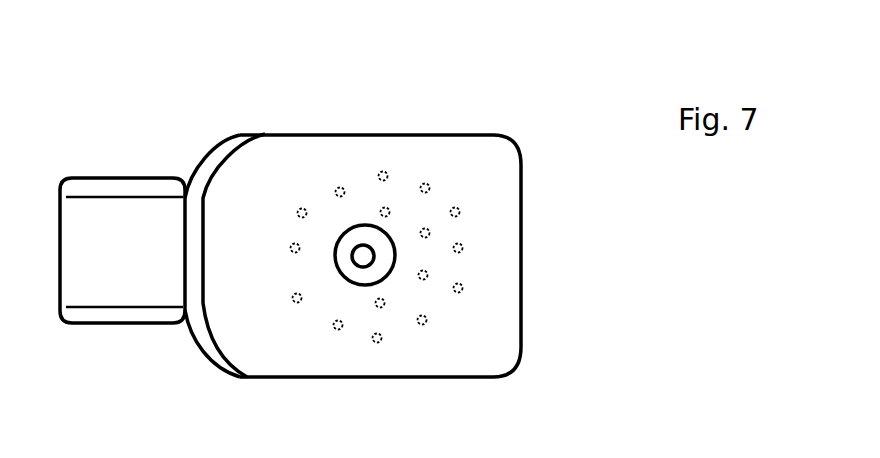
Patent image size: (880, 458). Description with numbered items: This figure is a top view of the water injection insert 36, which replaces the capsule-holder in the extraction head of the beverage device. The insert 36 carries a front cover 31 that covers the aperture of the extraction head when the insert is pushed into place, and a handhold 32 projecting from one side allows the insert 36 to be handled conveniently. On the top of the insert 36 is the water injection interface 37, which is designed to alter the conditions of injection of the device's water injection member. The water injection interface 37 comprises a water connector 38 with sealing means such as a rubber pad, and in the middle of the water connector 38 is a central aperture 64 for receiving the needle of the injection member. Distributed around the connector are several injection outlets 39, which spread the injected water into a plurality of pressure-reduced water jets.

The front cover 31 is at (230, 147).
The handhold 32 is at (125, 296).
The water injection insert 36 is at (528, 222).
The water injection interface 37 is at (362, 192).
The water connector 38 is at (387, 227).
The injection outlets 39 is at (470, 347).
The central aperture 64 is at (360, 268).